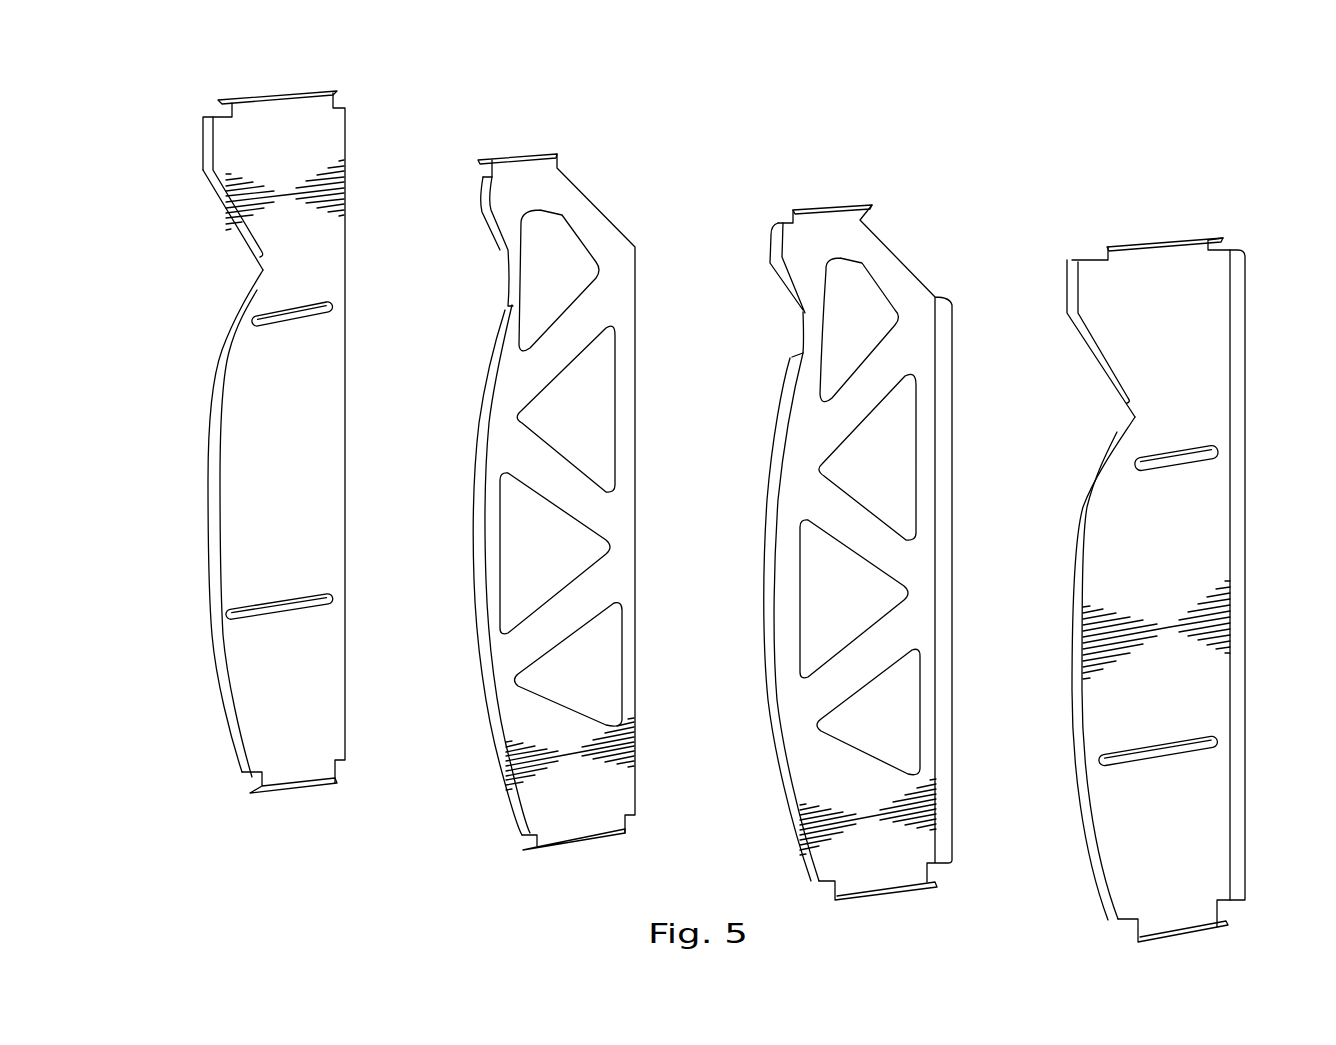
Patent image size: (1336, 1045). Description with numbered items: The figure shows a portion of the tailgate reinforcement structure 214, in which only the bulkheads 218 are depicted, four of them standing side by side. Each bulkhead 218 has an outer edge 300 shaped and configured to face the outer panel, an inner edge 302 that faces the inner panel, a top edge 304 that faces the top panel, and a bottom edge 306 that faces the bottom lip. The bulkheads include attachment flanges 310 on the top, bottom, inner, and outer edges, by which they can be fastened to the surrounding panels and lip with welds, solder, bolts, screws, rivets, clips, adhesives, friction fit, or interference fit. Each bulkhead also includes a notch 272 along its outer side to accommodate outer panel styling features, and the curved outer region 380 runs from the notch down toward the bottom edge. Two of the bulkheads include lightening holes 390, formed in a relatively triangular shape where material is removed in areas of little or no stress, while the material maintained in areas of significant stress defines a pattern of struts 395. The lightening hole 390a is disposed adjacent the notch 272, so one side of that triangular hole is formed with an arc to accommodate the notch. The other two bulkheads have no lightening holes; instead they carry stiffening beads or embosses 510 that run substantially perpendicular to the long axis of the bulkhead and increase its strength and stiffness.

The tailgate reinforcement structure 214 is at (126, 102).
The bulkhead 218 is at (262, 92).
The top edge 304 is at (292, 92).
The notch 272 is at (248, 270).
The outer edge 300 is at (208, 460).
The curved portion 380 is at (213, 667).
The inner edge 302 is at (348, 356).
The bottom edge 306 is at (312, 795).
The lightening hole 390 is at (568, 272).
The lightening hole adjacent the notch 390a is at (566, 226).
The strut 395 is at (860, 418).
The attachment flange 310 is at (1118, 242).
The stiffening bead or emboss 510 is at (1219, 451).